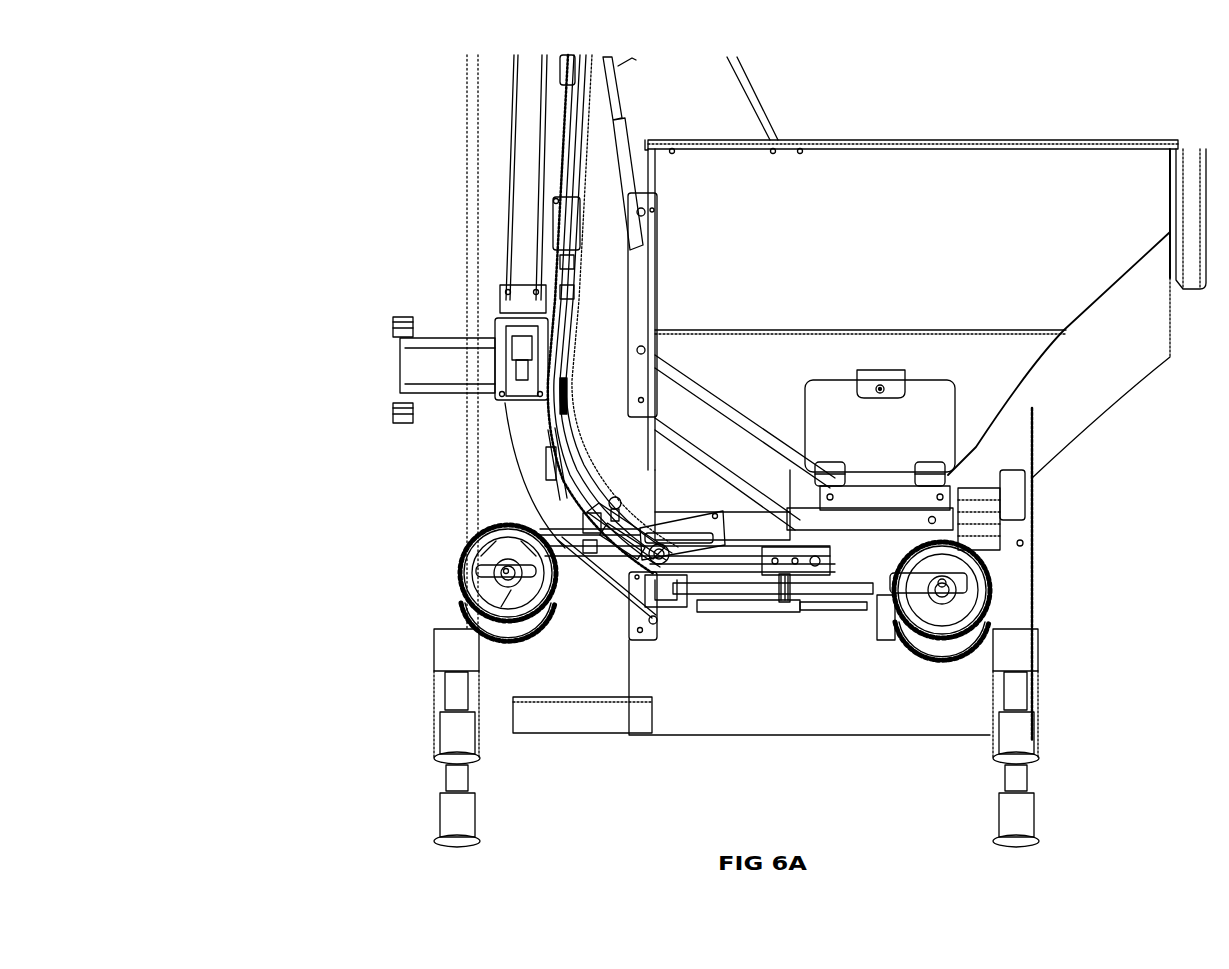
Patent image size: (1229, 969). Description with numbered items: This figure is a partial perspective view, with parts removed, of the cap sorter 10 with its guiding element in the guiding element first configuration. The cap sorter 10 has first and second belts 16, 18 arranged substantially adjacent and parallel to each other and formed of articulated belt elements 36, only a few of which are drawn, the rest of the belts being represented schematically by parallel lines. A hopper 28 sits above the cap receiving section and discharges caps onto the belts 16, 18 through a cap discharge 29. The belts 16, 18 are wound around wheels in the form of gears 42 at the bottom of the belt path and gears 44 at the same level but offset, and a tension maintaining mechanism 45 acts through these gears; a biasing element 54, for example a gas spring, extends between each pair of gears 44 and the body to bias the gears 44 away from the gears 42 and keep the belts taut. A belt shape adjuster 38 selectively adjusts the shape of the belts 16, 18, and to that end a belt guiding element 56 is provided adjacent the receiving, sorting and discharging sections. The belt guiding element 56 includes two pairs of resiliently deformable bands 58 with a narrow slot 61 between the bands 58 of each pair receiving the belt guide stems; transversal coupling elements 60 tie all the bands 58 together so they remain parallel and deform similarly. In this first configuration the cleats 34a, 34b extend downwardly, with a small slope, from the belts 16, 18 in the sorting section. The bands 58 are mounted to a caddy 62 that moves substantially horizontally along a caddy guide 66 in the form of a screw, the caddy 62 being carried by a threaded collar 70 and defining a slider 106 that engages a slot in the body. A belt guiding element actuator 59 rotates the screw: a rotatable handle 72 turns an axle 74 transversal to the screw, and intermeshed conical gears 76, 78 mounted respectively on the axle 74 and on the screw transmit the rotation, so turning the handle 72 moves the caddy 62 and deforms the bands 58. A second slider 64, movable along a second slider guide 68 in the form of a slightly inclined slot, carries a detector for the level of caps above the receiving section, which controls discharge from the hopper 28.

The cap sorter 10 is at (244, 104).
The first belt 16 is at (520, 182).
The second belt 18 is at (480, 301).
The hopper 28 is at (748, 340).
The cap discharge 29 is at (745, 452).
The cleat 34a is at (565, 295).
The cleat 34b is at (562, 265).
The belt element 36 is at (585, 240).
The belt shape adjuster 38 is at (556, 501).
The gears 42 is at (455, 628).
The gears 44 is at (1020, 640).
The tension maintaining mechanism 45 is at (708, 615).
The biasing element 54 is at (616, 742).
The belt guiding element 56 is at (562, 428).
The bands 58 is at (556, 493).
The belt guiding element actuator 59 is at (616, 478).
The coupling elements 60 is at (548, 470).
The slot 61 is at (591, 490).
The caddy 62 is at (790, 588).
The second slider 64 is at (480, 550).
The caddy guide 66 is at (832, 593).
The second slider guide 68 is at (690, 520).
The threaded collar 70 is at (780, 590).
The rotatable handle 72 is at (608, 515).
The axle 74 is at (650, 585).
The conical gear 76 is at (650, 615).
The conical gear 78 is at (668, 642).
The slider 106 is at (782, 549).